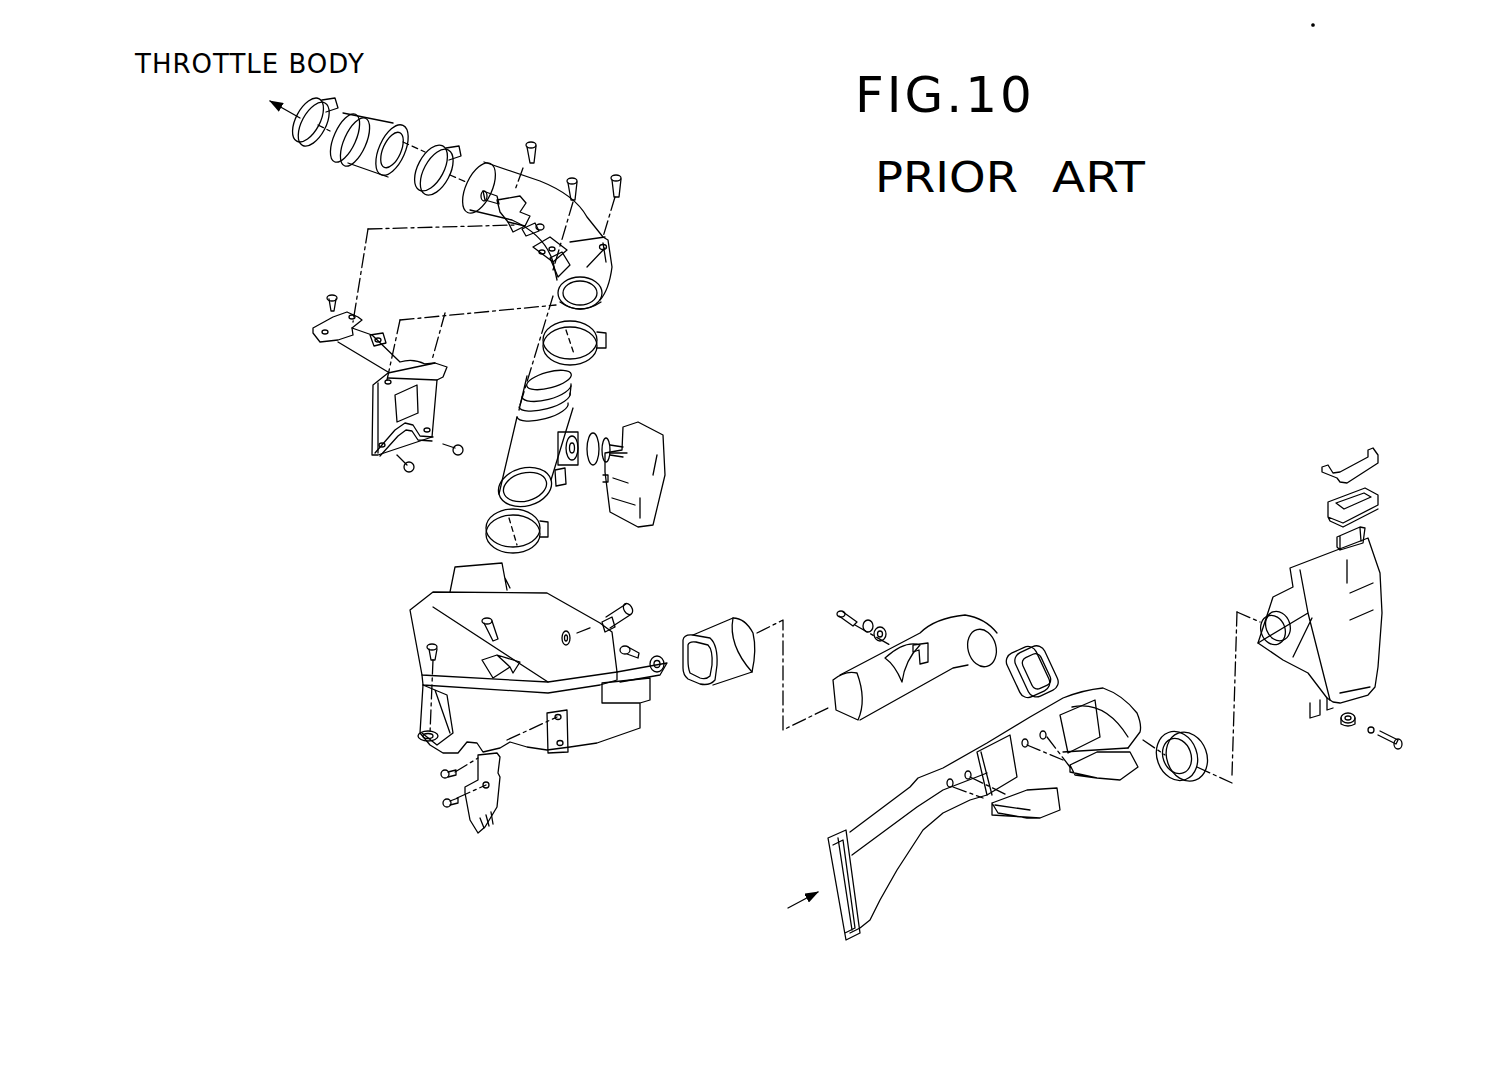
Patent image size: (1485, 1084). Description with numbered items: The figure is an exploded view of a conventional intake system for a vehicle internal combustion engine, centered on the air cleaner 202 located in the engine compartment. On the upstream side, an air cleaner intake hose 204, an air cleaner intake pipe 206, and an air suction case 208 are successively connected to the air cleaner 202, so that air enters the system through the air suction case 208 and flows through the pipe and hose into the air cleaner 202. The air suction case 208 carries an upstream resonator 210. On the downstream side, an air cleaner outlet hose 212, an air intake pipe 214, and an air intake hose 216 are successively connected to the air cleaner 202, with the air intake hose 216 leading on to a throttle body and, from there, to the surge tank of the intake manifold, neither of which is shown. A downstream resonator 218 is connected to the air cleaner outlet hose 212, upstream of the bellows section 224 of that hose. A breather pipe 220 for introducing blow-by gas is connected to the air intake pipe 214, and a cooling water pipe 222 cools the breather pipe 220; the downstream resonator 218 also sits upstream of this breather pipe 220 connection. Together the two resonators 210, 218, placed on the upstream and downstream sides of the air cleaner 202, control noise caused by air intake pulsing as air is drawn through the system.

The air cleaner 202 is at (408, 647).
The air cleaner intake hose 204 is at (722, 616).
The air cleaner intake pipe 206 is at (935, 615).
The air suction case 208 is at (945, 837).
The upstream resonator 210 is at (1385, 617).
The air cleaner outlet hose 212 is at (497, 475).
The air intake pipe 214 is at (613, 240).
The air intake hose 216 is at (385, 113).
The downstream resonator 218 is at (672, 440).
The breather pipe 220 is at (494, 187).
The cooling water pipe 222 is at (476, 218).
The bellows section 224 is at (572, 407).